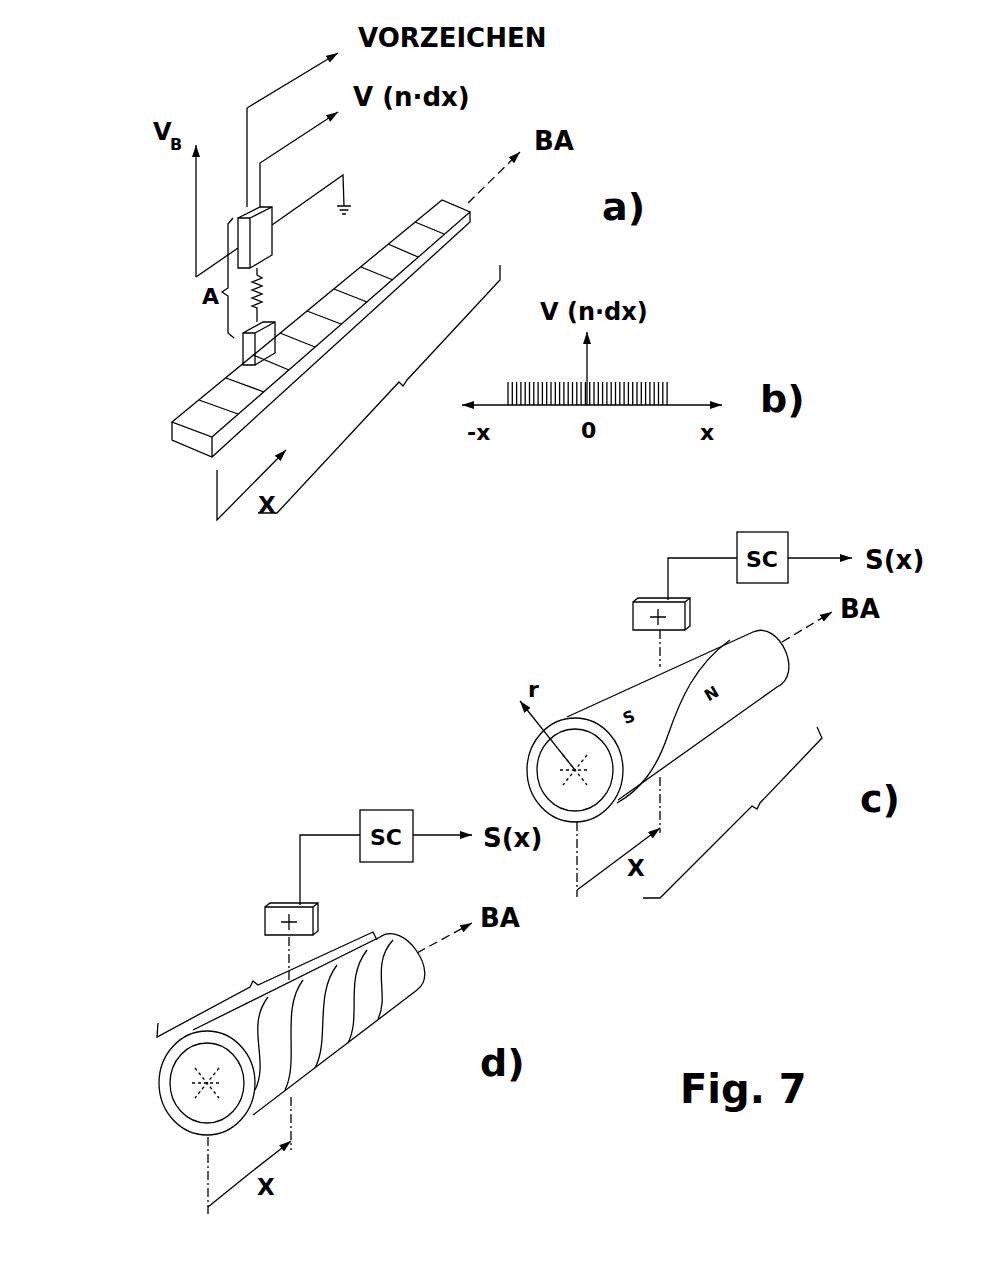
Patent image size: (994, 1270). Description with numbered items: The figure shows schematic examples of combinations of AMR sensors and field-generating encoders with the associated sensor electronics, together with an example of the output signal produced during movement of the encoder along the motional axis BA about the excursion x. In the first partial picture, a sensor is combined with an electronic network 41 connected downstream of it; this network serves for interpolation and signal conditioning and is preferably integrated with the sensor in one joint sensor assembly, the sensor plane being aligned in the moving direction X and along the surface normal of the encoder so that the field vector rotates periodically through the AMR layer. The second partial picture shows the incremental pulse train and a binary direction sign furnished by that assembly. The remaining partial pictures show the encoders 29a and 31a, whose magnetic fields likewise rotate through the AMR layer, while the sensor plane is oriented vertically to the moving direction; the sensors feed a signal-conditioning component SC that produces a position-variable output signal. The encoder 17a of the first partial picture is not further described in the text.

The electronic network 41 is at (262, 240).
The magnetic scale with alternating poles 17a is at (310, 360).
The encoder 29a is at (673, 737).
The encoder 31a is at (333, 1033).